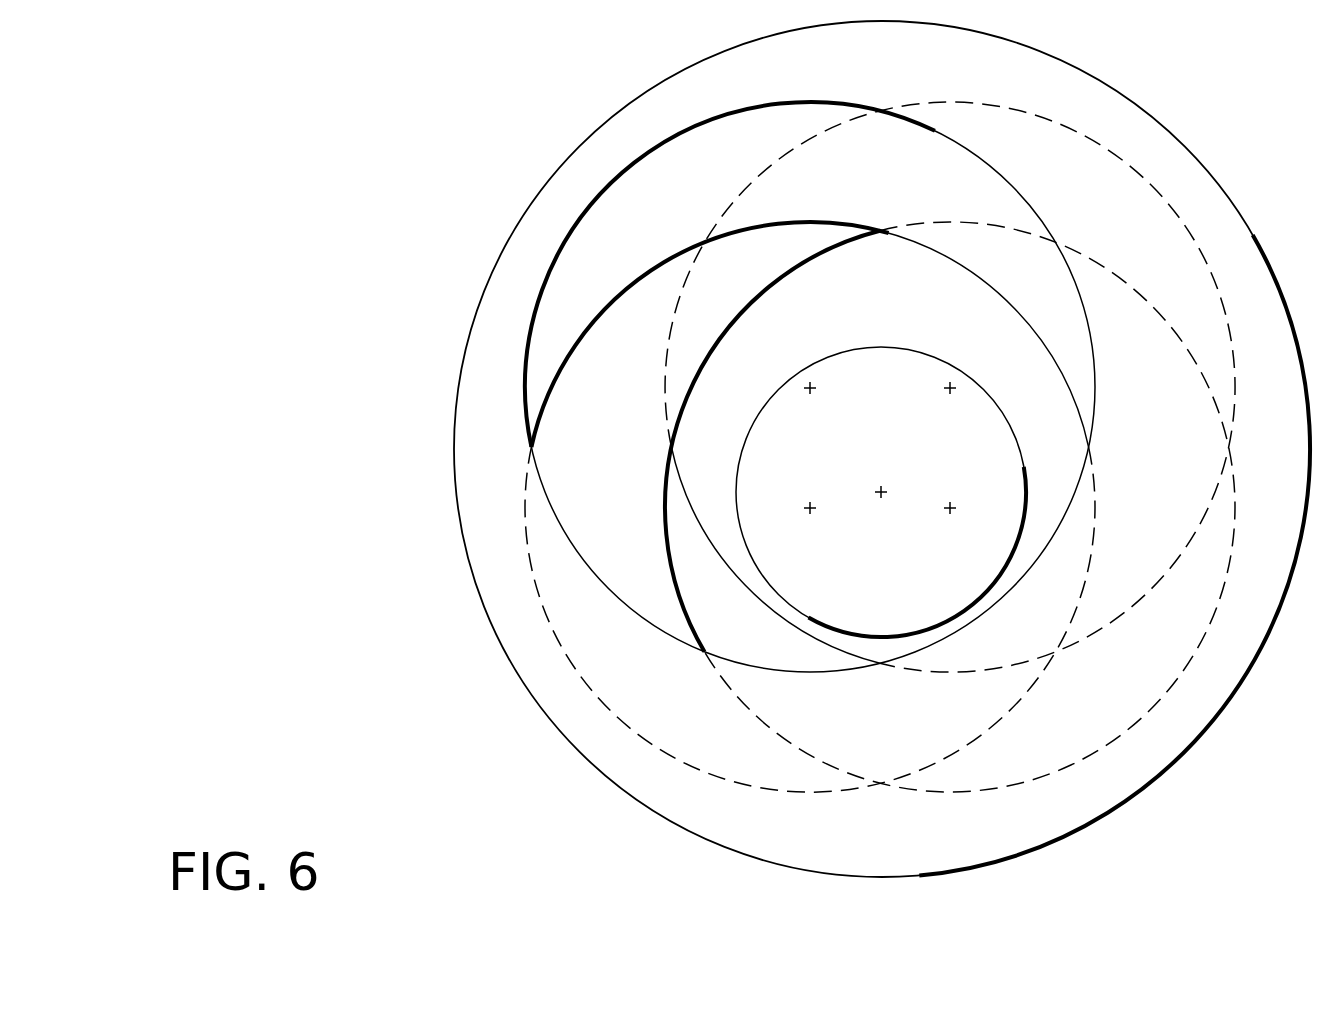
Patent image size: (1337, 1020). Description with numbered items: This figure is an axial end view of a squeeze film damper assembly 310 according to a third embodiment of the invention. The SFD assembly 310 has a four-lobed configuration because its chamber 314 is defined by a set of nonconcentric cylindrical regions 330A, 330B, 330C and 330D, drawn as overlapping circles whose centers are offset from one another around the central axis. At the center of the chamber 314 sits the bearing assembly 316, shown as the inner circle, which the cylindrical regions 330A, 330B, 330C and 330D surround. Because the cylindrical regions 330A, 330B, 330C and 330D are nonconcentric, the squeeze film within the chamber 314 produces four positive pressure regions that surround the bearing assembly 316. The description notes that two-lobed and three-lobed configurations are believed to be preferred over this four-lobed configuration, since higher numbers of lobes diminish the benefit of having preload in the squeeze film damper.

The SFD assembly 310 is at (468, 128).
The chamber 314 is at (727, 118).
The bearing assembly 316 is at (1005, 586).
The cylindrical region 330A is at (573, 232).
The cylindrical region 330B is at (549, 397).
The cylindrical region 330C is at (665, 518).
The cylindrical region 330D is at (1179, 208).